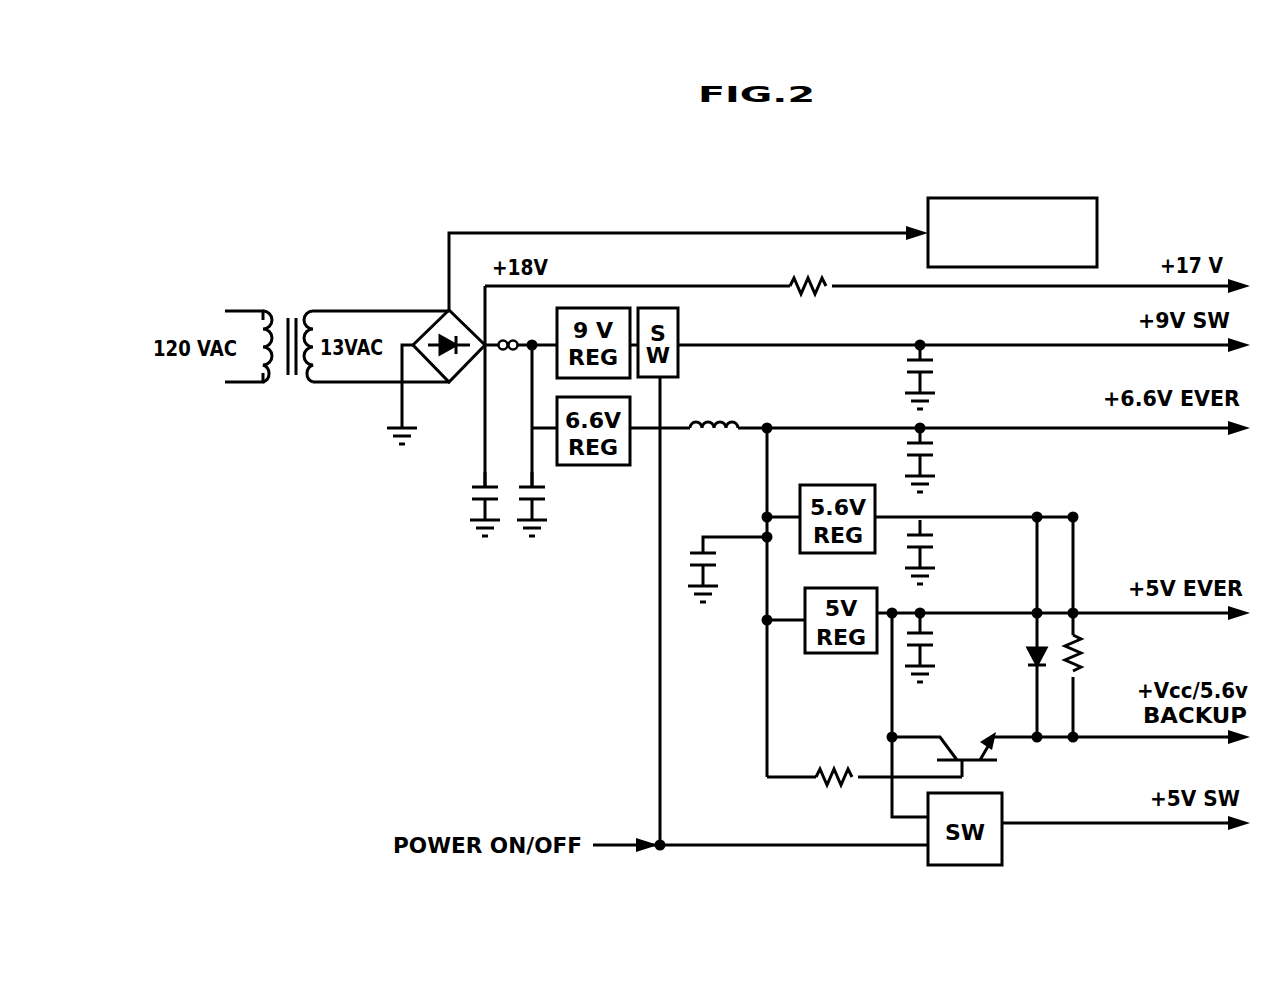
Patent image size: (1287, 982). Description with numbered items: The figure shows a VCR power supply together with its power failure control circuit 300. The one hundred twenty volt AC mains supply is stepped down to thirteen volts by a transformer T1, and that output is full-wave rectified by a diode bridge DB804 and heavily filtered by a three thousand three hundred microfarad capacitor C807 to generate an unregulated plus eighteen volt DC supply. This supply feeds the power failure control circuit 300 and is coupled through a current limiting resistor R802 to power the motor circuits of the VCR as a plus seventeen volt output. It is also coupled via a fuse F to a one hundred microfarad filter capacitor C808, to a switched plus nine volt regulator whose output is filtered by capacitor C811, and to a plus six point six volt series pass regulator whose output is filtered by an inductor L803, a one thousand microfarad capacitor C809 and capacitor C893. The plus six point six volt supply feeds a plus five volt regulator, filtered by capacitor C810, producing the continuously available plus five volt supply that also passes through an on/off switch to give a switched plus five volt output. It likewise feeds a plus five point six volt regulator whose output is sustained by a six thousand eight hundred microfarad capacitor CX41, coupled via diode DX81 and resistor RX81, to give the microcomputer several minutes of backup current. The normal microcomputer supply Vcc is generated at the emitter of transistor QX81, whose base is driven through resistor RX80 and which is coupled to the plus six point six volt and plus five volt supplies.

The power failure control circuit 300 is at (1228, 173).
The transformer T1 is at (337, 327).
The diode bridge rectifier DB804 is at (430, 298).
The fuse F is at (510, 330).
The current limiting resistor R802 is at (808, 287).
The inductor L803 is at (714, 399).
The capacitor C807 is at (434, 504).
The filter capacitor C808 is at (568, 504).
The capacitor C809 is at (717, 540).
The capacitor 22 microfarad C811 is at (956, 377).
The capacitor 100 microfarad C893 is at (959, 460).
The capacitor CX41 is at (962, 552).
The capacitor C810 is at (952, 650).
The resistor 620 ohm RX81 is at (1109, 627).
The diode DX81 is at (1009, 627).
The resistor 1 kilohm RX80 is at (864, 750).
The transistor QX81 is at (1061, 754).